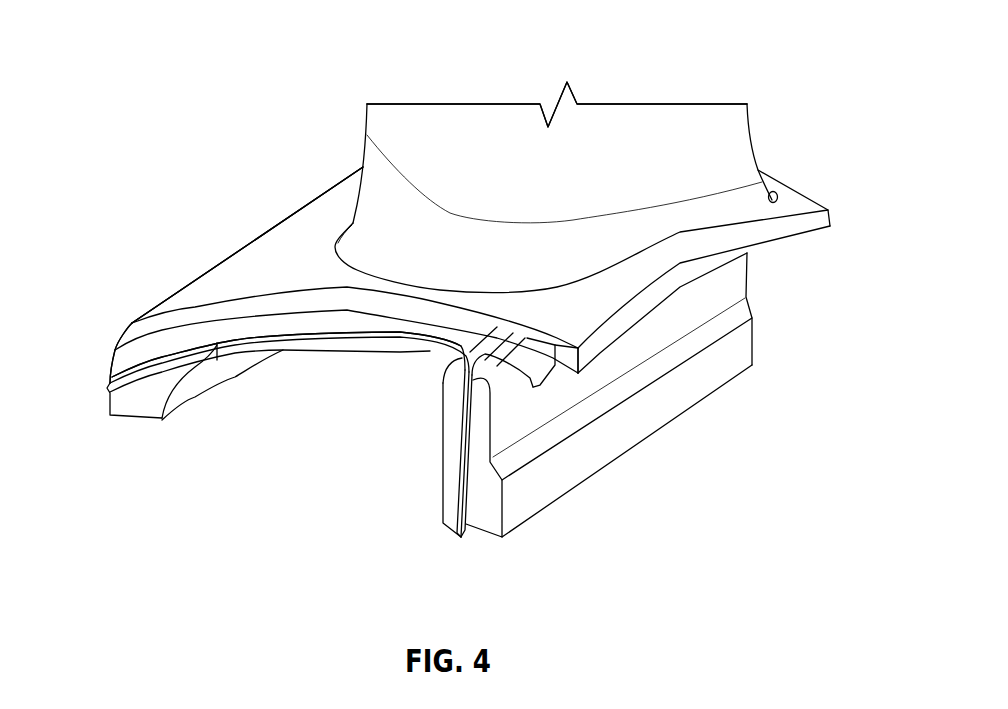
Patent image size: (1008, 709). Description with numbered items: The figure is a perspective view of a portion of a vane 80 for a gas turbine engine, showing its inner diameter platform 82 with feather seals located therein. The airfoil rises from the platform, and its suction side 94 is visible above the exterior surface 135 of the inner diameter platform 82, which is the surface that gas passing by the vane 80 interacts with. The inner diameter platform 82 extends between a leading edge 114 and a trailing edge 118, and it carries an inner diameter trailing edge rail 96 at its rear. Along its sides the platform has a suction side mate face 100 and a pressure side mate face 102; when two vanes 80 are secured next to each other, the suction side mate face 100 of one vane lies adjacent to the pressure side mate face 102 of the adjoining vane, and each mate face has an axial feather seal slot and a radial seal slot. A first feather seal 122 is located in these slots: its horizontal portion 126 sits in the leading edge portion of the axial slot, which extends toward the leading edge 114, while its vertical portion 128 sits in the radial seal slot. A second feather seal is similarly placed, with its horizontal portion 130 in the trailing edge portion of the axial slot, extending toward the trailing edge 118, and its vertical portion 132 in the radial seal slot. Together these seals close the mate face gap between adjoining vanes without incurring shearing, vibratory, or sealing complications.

The vane 80 is at (196, 182).
The inner diameter platform 82 is at (203, 304).
The suction side 94 is at (468, 143).
The inner diameter trailing edge rail 96 is at (730, 352).
The suction side mate face 100 is at (353, 348).
The pressure side mate face 102 is at (803, 190).
The leading edge 114 is at (112, 347).
The trailing edge 118 is at (580, 347).
The first feather seal 122 is at (428, 352).
The horizontal portion 126 is at (163, 418).
The vertical portion 128 is at (452, 470).
The horizontal portion 130 is at (523, 367).
The vertical portion 132 is at (482, 402).
The exterior surface 135 is at (295, 243).